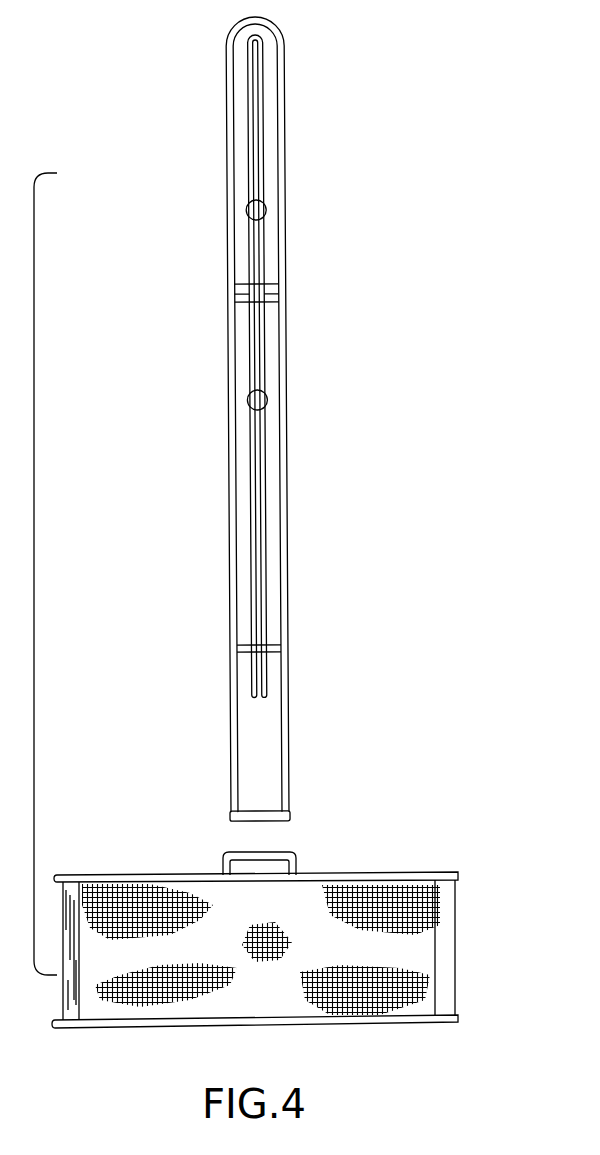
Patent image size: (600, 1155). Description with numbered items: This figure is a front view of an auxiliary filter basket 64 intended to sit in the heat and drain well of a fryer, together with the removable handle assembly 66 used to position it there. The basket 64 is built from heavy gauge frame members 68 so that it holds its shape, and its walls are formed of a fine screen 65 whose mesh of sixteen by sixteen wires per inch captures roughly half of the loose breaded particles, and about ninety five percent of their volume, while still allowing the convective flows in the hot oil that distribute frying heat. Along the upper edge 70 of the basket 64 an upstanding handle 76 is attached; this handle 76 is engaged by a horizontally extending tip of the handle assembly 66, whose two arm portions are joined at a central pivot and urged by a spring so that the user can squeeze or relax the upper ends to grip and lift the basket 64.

The auxiliary filter basket 64 is at (304, 943).
The fine screen 65 is at (452, 900).
The removable handle assembly 66 is at (286, 388).
The heavy gauge frame members 68 is at (420, 1025).
The upper edge 70 is at (389, 872).
The upstanding handle 76 is at (298, 856).